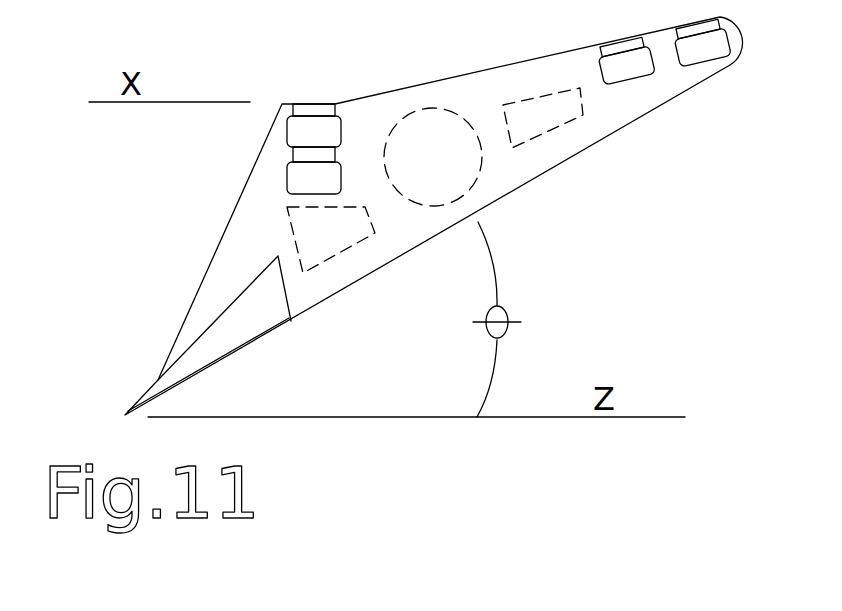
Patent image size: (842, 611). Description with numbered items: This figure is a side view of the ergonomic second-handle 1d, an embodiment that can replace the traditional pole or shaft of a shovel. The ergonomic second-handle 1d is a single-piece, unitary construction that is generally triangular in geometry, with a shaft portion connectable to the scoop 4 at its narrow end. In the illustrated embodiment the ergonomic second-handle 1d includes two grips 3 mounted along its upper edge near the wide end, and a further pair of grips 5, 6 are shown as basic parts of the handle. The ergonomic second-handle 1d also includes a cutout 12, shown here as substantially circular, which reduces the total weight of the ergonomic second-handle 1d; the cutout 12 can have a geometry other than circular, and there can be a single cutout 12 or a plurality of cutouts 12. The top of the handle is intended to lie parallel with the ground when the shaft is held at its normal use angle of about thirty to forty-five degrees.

The ergonomic second-handle 1d is at (235, 200).
The grips 3 is at (727, 70).
The scoop 4 is at (188, 372).
The grip 5 is at (313, 110).
The grip 6 is at (314, 170).
The cutout 12 is at (463, 118).